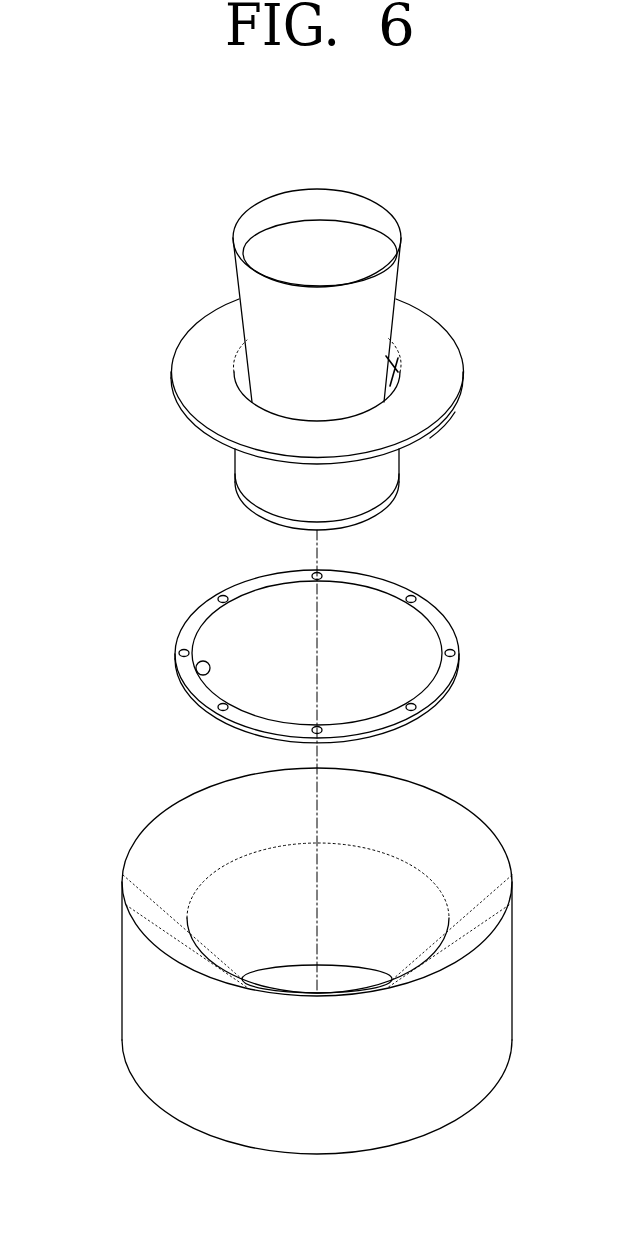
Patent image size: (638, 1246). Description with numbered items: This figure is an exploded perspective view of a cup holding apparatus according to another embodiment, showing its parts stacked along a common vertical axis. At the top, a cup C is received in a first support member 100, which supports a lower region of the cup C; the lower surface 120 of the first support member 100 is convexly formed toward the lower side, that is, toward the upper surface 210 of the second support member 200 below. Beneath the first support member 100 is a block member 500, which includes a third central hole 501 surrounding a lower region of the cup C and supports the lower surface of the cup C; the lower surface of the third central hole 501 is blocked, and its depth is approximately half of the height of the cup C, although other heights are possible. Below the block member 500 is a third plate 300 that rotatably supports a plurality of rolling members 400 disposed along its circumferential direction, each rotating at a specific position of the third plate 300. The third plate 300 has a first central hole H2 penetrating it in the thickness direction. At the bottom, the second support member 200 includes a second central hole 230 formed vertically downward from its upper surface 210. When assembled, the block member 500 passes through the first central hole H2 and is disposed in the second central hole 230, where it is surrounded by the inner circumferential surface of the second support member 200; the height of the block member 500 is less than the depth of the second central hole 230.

The cup C is at (237, 270).
The first support member 100 is at (176, 352).
The lower surface 120 is at (451, 408).
The third central hole 501 is at (403, 358).
The block member 500 is at (383, 470).
The third plate 300 is at (190, 612).
The rolling member 400 is at (454, 645).
The first central hole H2 is at (198, 664).
The second support member 200 is at (138, 993).
The second central hole 230 is at (212, 878).
The upper surface 210 is at (474, 872).